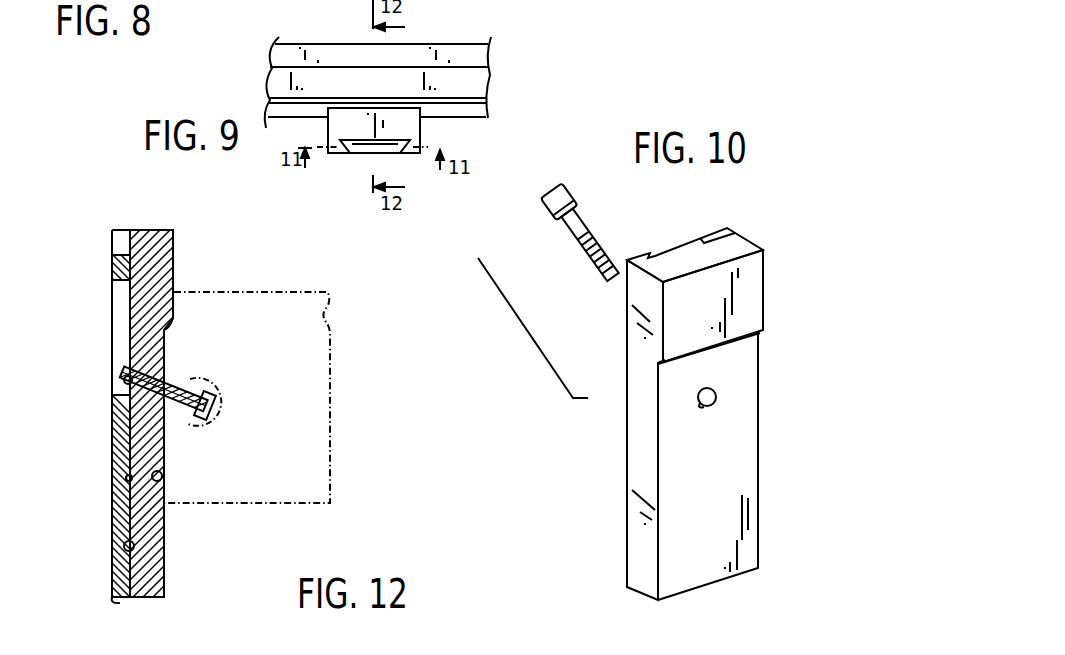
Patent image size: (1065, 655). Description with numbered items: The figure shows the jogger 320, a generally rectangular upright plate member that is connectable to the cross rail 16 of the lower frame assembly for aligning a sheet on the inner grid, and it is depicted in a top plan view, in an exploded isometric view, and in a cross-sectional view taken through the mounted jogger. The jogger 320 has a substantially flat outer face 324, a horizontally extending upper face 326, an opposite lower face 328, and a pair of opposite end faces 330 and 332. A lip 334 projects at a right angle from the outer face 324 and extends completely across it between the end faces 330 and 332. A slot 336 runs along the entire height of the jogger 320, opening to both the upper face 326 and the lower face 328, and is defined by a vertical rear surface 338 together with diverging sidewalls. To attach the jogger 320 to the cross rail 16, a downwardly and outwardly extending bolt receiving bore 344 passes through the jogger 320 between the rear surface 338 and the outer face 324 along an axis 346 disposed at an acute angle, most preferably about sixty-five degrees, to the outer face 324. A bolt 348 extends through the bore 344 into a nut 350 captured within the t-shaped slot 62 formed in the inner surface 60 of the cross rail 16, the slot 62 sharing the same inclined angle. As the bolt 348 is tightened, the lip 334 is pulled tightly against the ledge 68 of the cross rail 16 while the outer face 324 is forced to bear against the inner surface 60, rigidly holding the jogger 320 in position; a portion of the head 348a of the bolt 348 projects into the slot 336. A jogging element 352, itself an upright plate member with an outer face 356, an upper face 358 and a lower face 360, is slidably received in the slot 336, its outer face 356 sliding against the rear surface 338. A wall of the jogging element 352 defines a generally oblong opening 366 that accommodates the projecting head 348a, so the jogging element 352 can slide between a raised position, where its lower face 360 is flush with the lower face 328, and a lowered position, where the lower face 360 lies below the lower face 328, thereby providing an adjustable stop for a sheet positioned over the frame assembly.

In FIG. 9, the cross rail 16 is at (442, 42).
In FIG. 12, the cross rail 16 is at (344, 400).
In FIG. 12, the inner surface 60 is at (163, 477).
In FIG. 12, the t-shaped slot 62 is at (208, 366).
In FIG. 12, the ledge 68 is at (174, 291).
In FIG. 9, the jogger 320 is at (345, 158).
In FIG. 12, the outer face 324 is at (164, 561).
In FIG. 10, the outer face 324 is at (718, 515).
In FIG. 9, the upper face 326 is at (420, 128).
In FIG. 12, the upper face 326 is at (155, 229).
In FIG. 10, the upper face 326 is at (738, 242).
In FIG. 12, the lower face 328 is at (150, 598).
In FIG. 10, the lower face 328 is at (712, 592).
In FIG. 10, the end face 330 is at (760, 524).
In FIG. 10, the end face 332 is at (636, 348).
In FIG. 12, the lip 334 is at (170, 330).
In FIG. 10, the lip 334 is at (717, 343).
In FIG. 10, the slot 336 is at (684, 236).
In FIG. 12, the rear surface 338 is at (133, 547).
In FIG. 10, the bolt receiving bore 344 is at (700, 406).
In FIG. 10, the axis 346 is at (745, 455).
In FIG. 12, the bolt 348 is at (124, 428).
In FIG. 10, the bolt 348 is at (580, 256).
In FIG. 12, the head 348a is at (121, 385).
In FIG. 10, the head 348a is at (552, 188).
In FIG. 12, the nut 350 is at (196, 428).
In FIG. 9, the jogging element 352 is at (364, 158).
In FIG. 12, the jogging element 352 is at (106, 507).
In FIG. 12, the outer face 356 is at (125, 479).
In FIG. 12, the upper face 358 is at (118, 252).
In FIG. 12, the lower face 360 is at (112, 603).
In FIG. 12, the oblong opening 366 is at (117, 313).